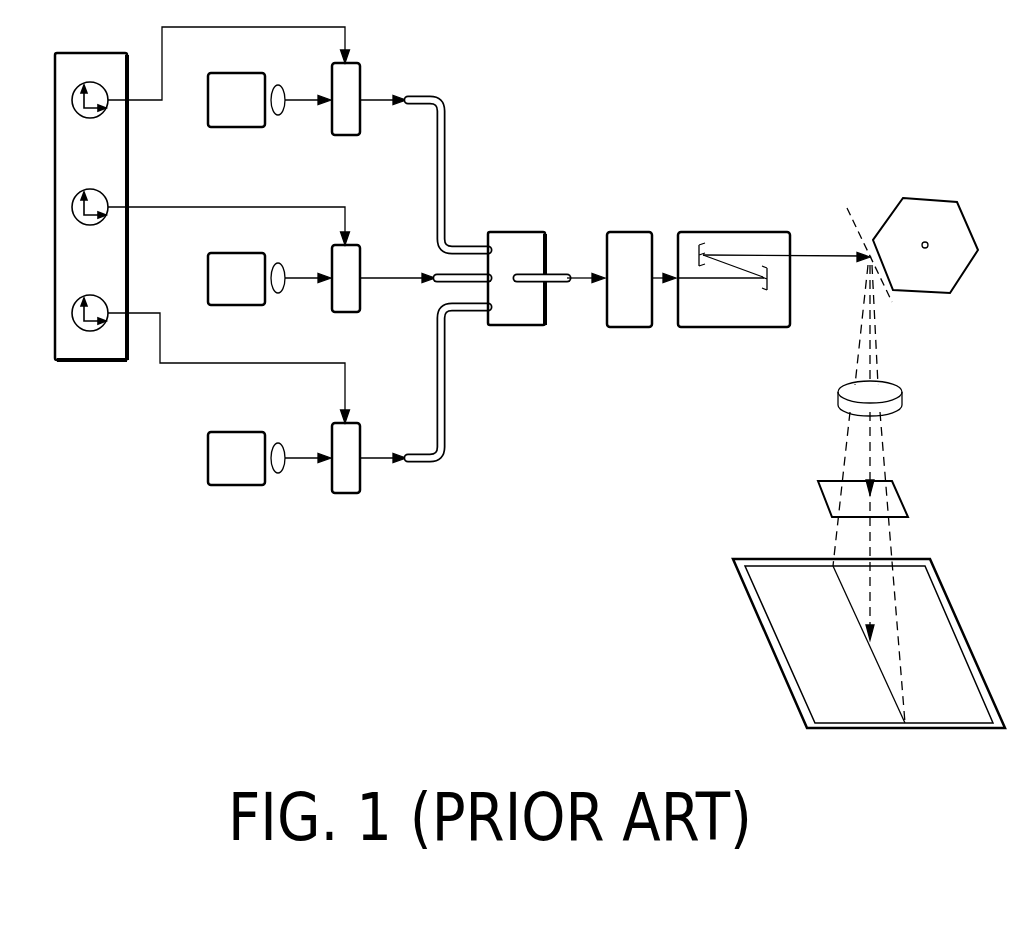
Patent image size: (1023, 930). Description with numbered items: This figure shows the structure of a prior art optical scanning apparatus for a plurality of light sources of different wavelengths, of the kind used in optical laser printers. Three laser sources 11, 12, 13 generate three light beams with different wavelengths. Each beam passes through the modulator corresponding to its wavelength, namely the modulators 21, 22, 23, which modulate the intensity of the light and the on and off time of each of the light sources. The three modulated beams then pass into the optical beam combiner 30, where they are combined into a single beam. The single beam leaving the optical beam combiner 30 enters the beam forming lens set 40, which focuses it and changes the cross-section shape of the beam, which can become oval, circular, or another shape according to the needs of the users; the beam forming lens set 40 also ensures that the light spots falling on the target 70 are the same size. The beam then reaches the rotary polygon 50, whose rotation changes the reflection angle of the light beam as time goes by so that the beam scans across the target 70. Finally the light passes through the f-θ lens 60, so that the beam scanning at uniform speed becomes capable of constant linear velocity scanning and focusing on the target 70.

The laser source 11 is at (243, 73).
The laser source 12 is at (228, 253).
The laser source 13 is at (225, 432).
The modulator 21 is at (350, 72).
The modulator 22 is at (350, 253).
The modulator 23 is at (350, 431).
The optical beam combiner 30 is at (510, 312).
The beam forming lens set 40 is at (733, 240).
The rotary polygon 50 is at (920, 210).
The f-θ lens 60 is at (838, 398).
The target 70 is at (790, 620).